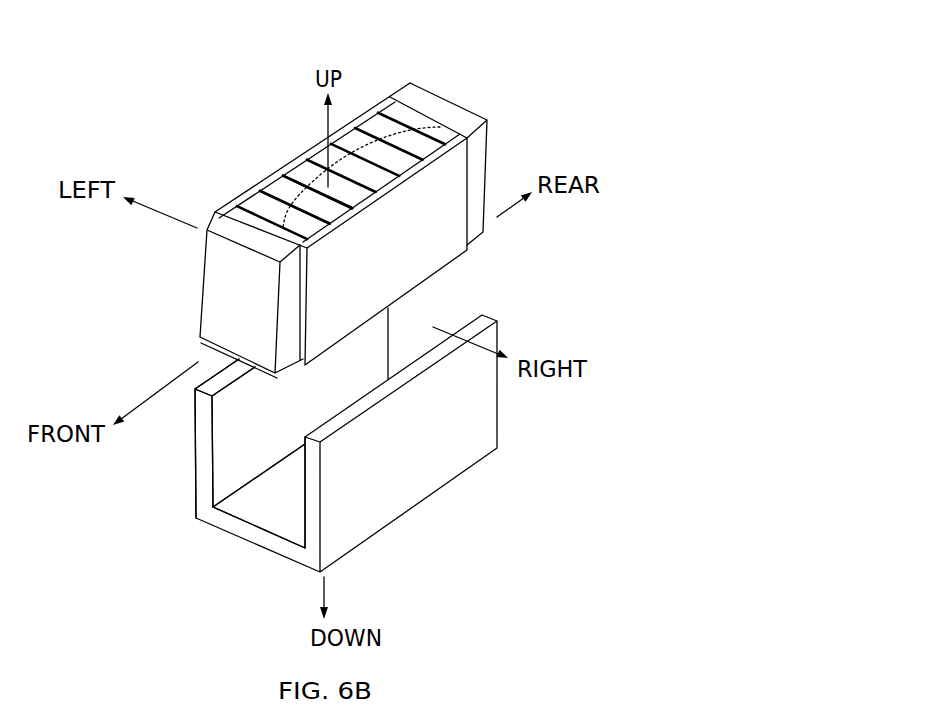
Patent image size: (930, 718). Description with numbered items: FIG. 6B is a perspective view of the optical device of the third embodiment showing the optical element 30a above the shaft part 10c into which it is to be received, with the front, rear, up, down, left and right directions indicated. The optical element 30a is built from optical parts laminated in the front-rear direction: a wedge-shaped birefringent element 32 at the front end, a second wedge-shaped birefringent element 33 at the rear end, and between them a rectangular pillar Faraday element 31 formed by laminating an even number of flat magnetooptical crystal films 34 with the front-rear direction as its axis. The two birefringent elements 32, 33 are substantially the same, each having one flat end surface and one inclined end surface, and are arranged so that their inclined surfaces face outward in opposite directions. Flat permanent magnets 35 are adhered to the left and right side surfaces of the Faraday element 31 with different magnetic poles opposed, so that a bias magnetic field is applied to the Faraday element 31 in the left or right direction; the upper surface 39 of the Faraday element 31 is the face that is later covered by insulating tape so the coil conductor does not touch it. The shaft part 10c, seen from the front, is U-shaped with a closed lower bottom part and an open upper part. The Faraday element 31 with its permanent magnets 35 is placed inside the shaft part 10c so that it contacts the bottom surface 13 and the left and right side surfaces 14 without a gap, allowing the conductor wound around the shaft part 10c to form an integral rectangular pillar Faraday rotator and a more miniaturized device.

The optical element 30a is at (256, 157).
The Faraday element 31 is at (395, 127).
The birefringent element 32 is at (220, 262).
The birefringent element 33 is at (457, 112).
The magnetooptical crystal film 34 is at (303, 174).
The permanent magnet 35 is at (371, 107).
The upper surface 39 is at (292, 190).
The shaft part 10c is at (205, 450).
The bottom surface 13 is at (271, 518).
The side surface 14 is at (256, 435).